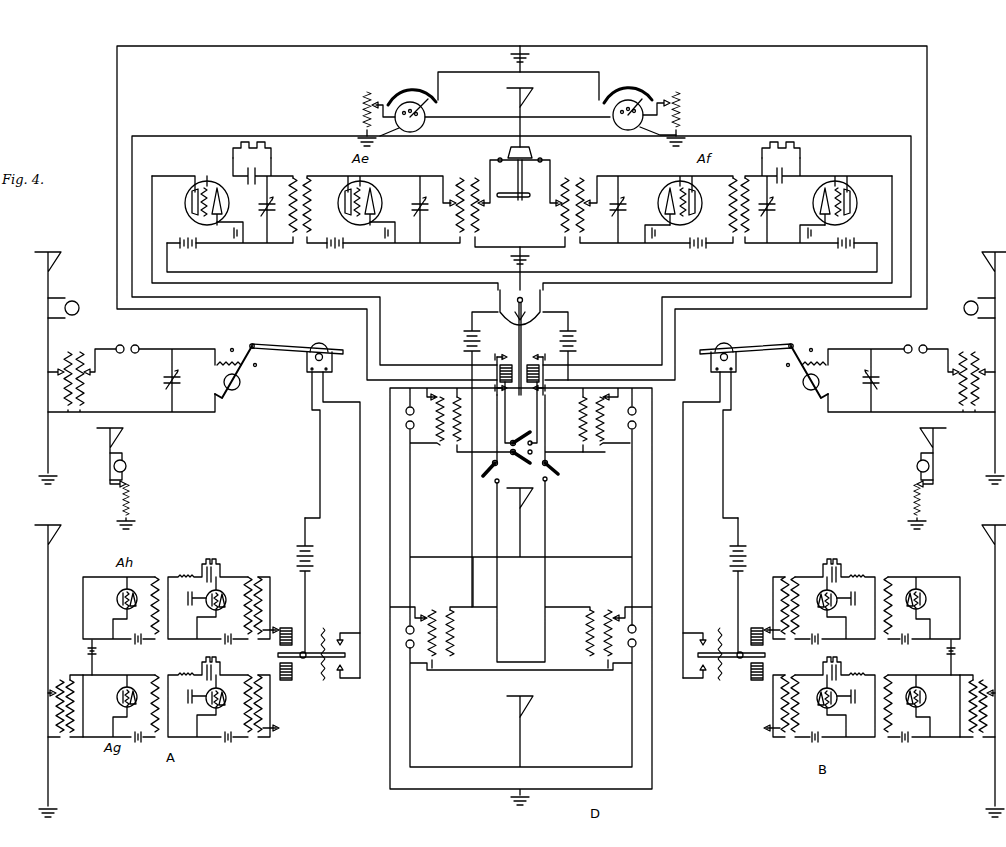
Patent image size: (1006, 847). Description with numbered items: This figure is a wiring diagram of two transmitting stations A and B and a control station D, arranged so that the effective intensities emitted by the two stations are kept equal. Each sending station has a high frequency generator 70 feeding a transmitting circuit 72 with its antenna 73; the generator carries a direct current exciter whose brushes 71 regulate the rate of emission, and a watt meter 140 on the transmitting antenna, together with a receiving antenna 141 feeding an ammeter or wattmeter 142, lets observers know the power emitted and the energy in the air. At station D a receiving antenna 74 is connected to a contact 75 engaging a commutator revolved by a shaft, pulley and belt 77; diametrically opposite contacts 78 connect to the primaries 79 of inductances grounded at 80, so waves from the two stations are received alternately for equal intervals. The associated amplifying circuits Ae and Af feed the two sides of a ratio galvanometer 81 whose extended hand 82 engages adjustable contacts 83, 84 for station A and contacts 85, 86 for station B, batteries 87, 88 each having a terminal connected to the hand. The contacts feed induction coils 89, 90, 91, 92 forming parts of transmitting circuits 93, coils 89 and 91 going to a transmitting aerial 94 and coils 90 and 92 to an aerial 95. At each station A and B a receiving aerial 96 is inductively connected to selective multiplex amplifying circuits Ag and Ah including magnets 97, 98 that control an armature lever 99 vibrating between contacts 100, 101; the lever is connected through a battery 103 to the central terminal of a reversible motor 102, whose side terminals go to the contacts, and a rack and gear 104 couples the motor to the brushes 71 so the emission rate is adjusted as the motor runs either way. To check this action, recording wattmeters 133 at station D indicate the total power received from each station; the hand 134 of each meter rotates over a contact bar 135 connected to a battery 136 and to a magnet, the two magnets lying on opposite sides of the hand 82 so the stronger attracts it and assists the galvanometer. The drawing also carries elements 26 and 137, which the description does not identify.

The battery 136 is at (530, 58).
The receiving antenna 74 is at (532, 96).
The contact bar 135 is at (628, 100).
The hand 134 is at (641, 102).
The recording wattmeters 133 is at (620, 128).
The contact 75 is at (533, 152).
The contacts 78 is at (542, 160).
The primaries 79 is at (580, 180).
The rod 26 is at (522, 175).
The shaft, pulley and belt 77 is at (513, 198).
The ground 80 is at (530, 259).
The antenna 73 is at (55, 270).
The watt meter 140 is at (79, 312).
The rack and gear 104 is at (278, 347).
The reversible motor 102 is at (332, 372).
The high frequency generator 70 is at (240, 386).
The brushes 71 is at (226, 400).
The transmitting circuit 72 is at (160, 412).
The receiving antenna 141 is at (116, 440).
The ammeter or wattmeter 142 is at (126, 466).
The ratio galvanometer 81 is at (542, 303).
The extended hand 82 is at (523, 330).
The battery 88 is at (470, 337).
The battery 87 is at (580, 340).
The adjustable contact 86 is at (506, 352).
The adjustable contact 84 is at (544, 356).
The relay coils 137 is at (542, 372).
The adjustable contact 85 is at (504, 390).
The adjustable contact 83 is at (540, 390).
The induction coil 89 is at (435, 430).
The induction coil 91 is at (588, 430).
The transmitting circuits 93 is at (594, 452).
The transmitting aerial 94 is at (532, 500).
The receiving aerial 96 is at (50, 552).
The battery 103 is at (299, 548).
The magnet 98 is at (288, 626).
The armature lever 99 is at (306, 659).
The magnet 97 is at (290, 682).
The contact 101 is at (338, 644).
The contact 100 is at (337, 667).
The induction coil 90 is at (453, 637).
The induction coil 92 is at (588, 640).
The aerial 95 is at (532, 710).